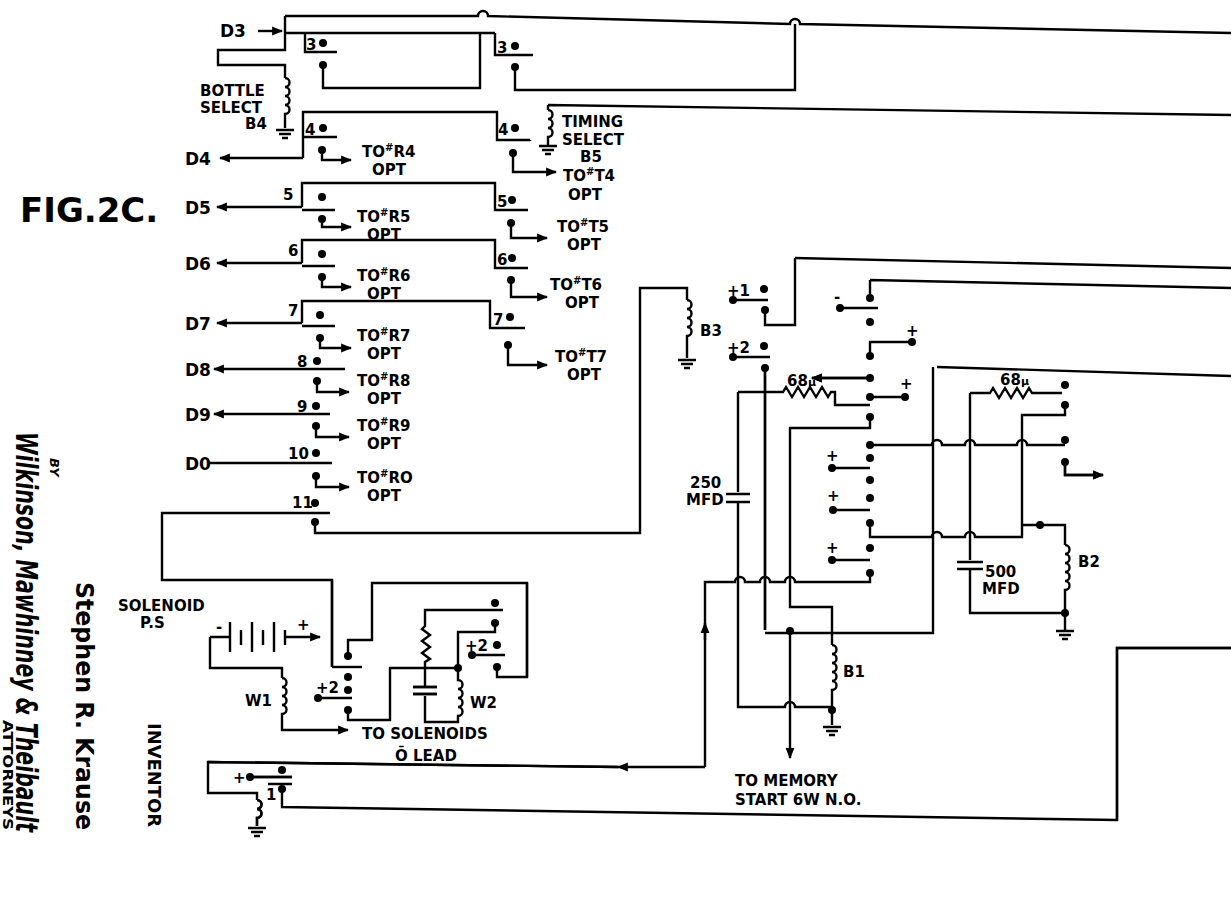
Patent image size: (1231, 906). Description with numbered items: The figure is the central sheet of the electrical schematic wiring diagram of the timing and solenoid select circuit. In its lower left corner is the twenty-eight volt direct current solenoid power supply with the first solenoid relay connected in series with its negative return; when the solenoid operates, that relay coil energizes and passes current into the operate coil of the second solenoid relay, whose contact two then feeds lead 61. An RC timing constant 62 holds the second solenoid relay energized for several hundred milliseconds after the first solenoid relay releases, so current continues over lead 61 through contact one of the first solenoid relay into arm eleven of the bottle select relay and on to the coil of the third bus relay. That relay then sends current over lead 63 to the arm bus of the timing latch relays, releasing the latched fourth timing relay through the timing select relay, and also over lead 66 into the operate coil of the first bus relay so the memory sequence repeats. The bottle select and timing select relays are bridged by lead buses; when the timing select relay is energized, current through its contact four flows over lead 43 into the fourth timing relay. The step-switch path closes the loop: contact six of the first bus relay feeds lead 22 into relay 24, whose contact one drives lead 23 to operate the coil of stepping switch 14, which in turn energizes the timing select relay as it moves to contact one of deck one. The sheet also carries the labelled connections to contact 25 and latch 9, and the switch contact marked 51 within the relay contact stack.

The switch contact 51 is at (344, 141).
The lead 43 is at (544, 172).
The lead 63 is at (1020, 262).
The lead 66 is at (766, 496).
The lead 61 is at (552, 610).
The RC timing constant 62 is at (437, 673).
The lead 22 is at (676, 768).
The lead 23 is at (382, 790).
The relay 24 is at (241, 813).
The normally open contact 25 is at (835, 351).
The stepping switch 14 is at (1165, 713).
The latch 9 is at (1115, 474).